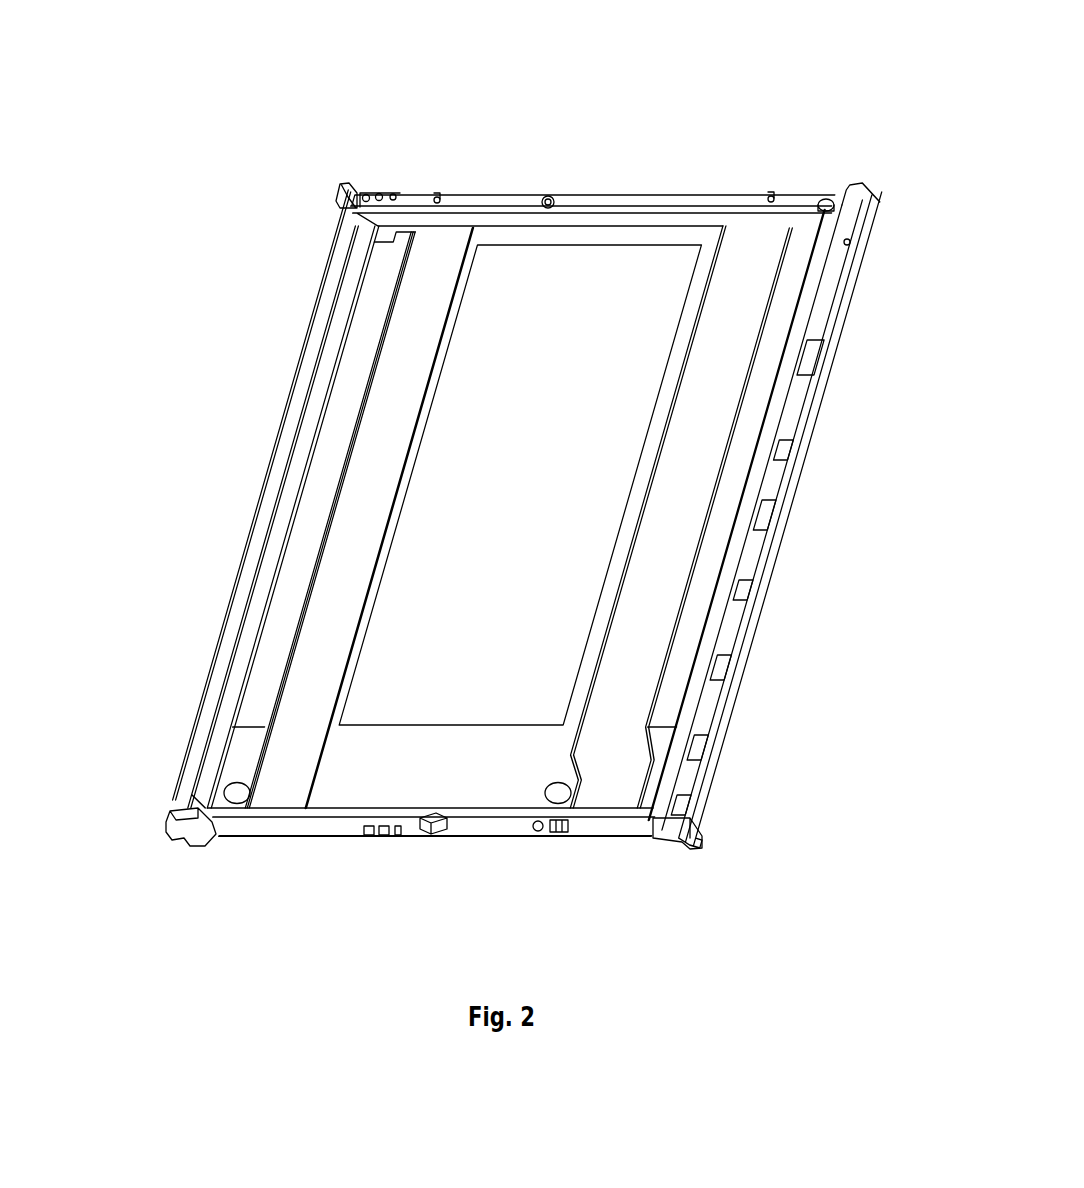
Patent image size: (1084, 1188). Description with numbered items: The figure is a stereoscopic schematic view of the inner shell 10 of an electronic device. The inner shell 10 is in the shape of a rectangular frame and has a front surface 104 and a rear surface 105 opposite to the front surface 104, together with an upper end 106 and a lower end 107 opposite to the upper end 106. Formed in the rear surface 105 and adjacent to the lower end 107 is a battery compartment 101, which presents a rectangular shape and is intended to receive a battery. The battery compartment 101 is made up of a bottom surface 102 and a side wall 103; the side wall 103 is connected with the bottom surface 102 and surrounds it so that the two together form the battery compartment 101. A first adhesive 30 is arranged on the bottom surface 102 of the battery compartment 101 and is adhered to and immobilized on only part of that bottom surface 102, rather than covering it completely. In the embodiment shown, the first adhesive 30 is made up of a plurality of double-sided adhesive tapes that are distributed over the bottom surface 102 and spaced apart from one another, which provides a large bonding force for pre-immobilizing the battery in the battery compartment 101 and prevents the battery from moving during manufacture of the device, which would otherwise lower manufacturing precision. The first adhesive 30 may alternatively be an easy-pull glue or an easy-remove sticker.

The inner shell 10 is at (580, 55).
The battery compartment 101 is at (662, 228).
The bottom surface 102 is at (402, 350).
The side wall 103 is at (723, 578).
The front surface 104 is at (880, 240).
The rear surface 105 is at (830, 196).
The upper end 106 is at (262, 197).
The lower end 107 is at (130, 806).
The first adhesive 30 is at (285, 617).